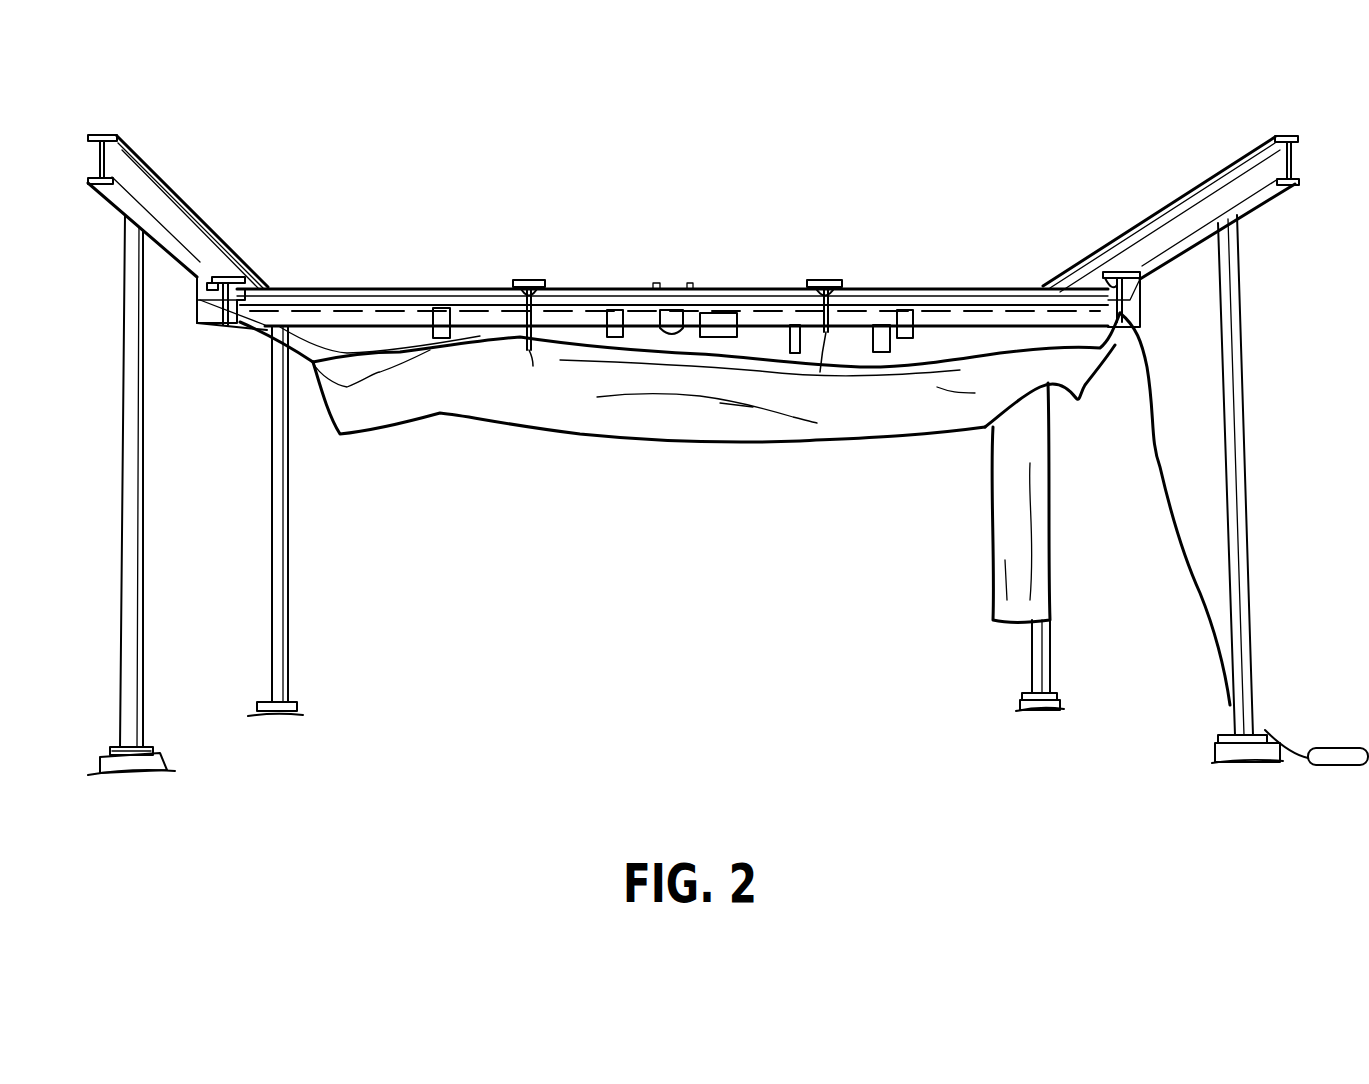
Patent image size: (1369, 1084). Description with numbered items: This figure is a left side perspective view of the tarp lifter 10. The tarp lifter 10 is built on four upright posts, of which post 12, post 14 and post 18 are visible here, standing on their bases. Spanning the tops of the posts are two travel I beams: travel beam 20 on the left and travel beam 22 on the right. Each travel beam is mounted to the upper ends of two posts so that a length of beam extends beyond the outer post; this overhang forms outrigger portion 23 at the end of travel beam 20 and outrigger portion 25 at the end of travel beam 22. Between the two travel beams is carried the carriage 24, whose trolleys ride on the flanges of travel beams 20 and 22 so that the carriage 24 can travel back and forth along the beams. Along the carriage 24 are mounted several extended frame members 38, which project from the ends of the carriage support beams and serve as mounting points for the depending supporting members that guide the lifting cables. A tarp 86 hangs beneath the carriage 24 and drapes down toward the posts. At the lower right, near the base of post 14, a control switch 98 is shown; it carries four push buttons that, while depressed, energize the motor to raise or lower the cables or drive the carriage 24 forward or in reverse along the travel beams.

The tarp lifter 10 is at (907, 250).
The upright post 12 is at (130, 325).
The upright post 14 is at (1240, 344).
The upright post 18 is at (275, 382).
The travel I beam 20 is at (183, 223).
The travel I beam 22 is at (1167, 233).
The outrigger portion 23 is at (117, 160).
The carriage 24 is at (447, 277).
The outrigger portion 25 is at (1275, 163).
The extended frame member 38 is at (232, 271).
The fabric canopy 86 is at (508, 408).
The control switch 98 is at (1333, 760).